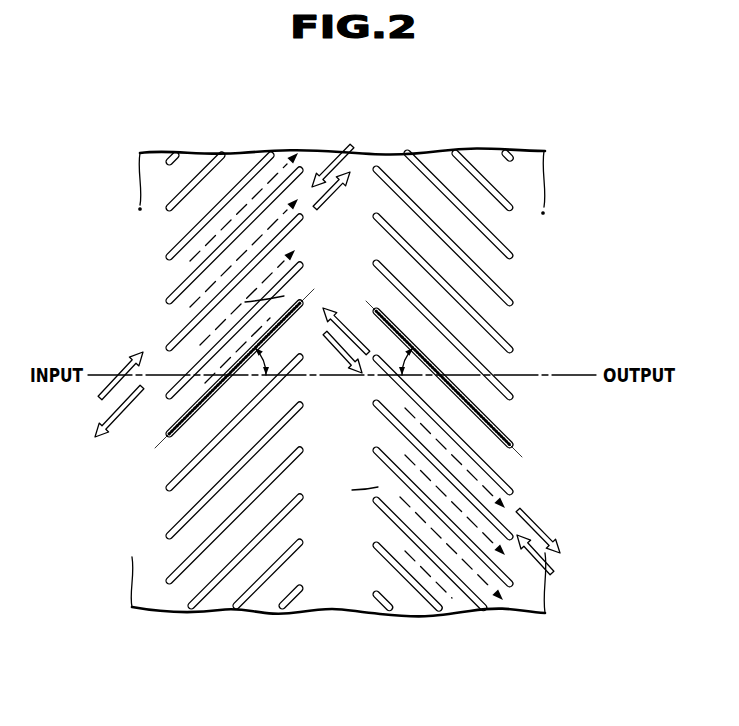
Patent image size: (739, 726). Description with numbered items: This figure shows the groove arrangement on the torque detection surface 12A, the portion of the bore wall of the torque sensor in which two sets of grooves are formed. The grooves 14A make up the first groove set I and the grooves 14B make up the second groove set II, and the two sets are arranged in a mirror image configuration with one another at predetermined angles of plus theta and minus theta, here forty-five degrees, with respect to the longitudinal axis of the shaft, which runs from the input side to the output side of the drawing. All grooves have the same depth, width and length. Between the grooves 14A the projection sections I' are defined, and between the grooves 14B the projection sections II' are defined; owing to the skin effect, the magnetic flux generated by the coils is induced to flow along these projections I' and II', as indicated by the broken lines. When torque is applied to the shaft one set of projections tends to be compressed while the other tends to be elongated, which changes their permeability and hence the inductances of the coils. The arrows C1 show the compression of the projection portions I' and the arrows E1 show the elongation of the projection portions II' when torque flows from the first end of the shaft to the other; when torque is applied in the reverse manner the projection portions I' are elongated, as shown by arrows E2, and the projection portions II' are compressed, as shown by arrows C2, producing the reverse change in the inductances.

The torque detection surface 12A is at (338, 580).
The grooves of first groove set 14A is at (196, 386).
The grooves of second groove set 14B is at (469, 385).
The first groove set I is at (224, 386).
The first projection sections I' is at (234, 386).
The second groove set II is at (443, 385).
The second projection sections II' is at (443, 385).
The compression arrows for projection portions I' C1 is at (121, 374).
The compression arrows for projection portions II' C2 is at (327, 337).
The elongation arrows for projection portions II' E1 is at (333, 313).
The elongation arrows for projection portions I' E2 is at (121, 420).